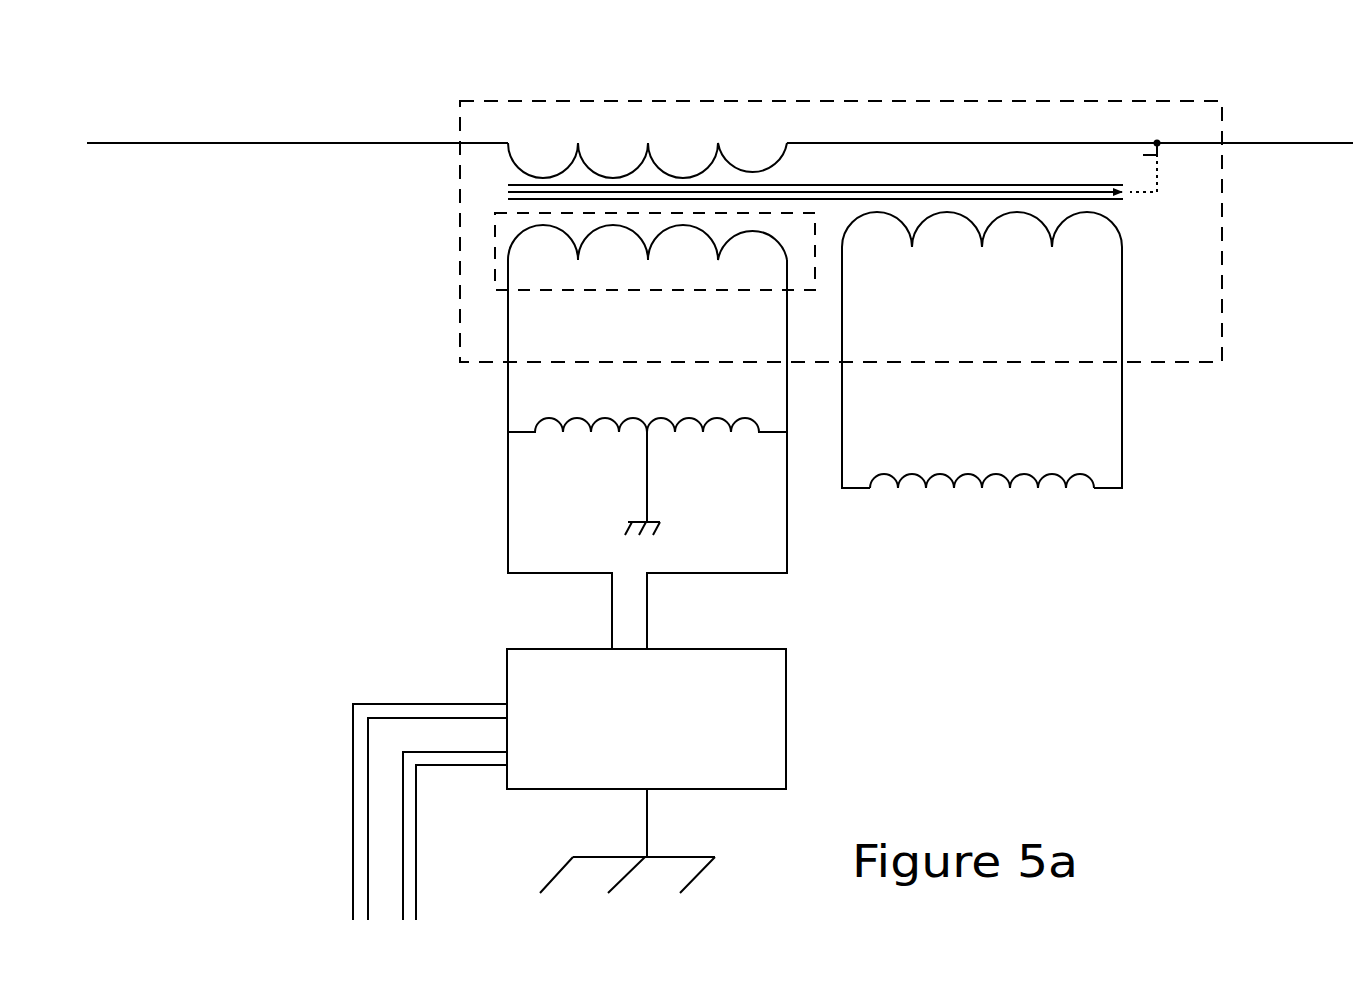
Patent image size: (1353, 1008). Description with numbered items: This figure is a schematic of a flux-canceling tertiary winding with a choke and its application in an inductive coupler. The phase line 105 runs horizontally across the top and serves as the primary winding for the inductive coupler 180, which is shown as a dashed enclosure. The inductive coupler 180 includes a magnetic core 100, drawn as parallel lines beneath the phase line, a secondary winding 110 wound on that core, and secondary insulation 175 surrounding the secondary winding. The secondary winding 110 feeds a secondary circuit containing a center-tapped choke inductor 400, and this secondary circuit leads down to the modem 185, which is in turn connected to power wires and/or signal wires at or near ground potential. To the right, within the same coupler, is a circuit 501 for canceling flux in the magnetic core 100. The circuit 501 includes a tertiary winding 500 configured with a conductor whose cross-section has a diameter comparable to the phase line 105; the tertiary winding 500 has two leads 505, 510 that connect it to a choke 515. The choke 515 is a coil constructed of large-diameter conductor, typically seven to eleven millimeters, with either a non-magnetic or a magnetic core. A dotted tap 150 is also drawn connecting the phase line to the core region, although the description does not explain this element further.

The phase line 105 is at (213, 138).
The inductive coupler 180 is at (1106, 98).
The magnetic core 100 is at (495, 184).
The secondary insulation 175 is at (492, 232).
The secondary winding 110 is at (563, 240).
The choke inductor 400 is at (614, 411).
The tertiary winding 500 is at (1060, 250).
The lead 505 is at (852, 416).
The lead 510 is at (1134, 467).
The circuit for canceling flux 501 is at (1152, 398).
The choke 515 is at (953, 490).
The tap connection 150 is at (1167, 182).
The modem 185 is at (790, 709).